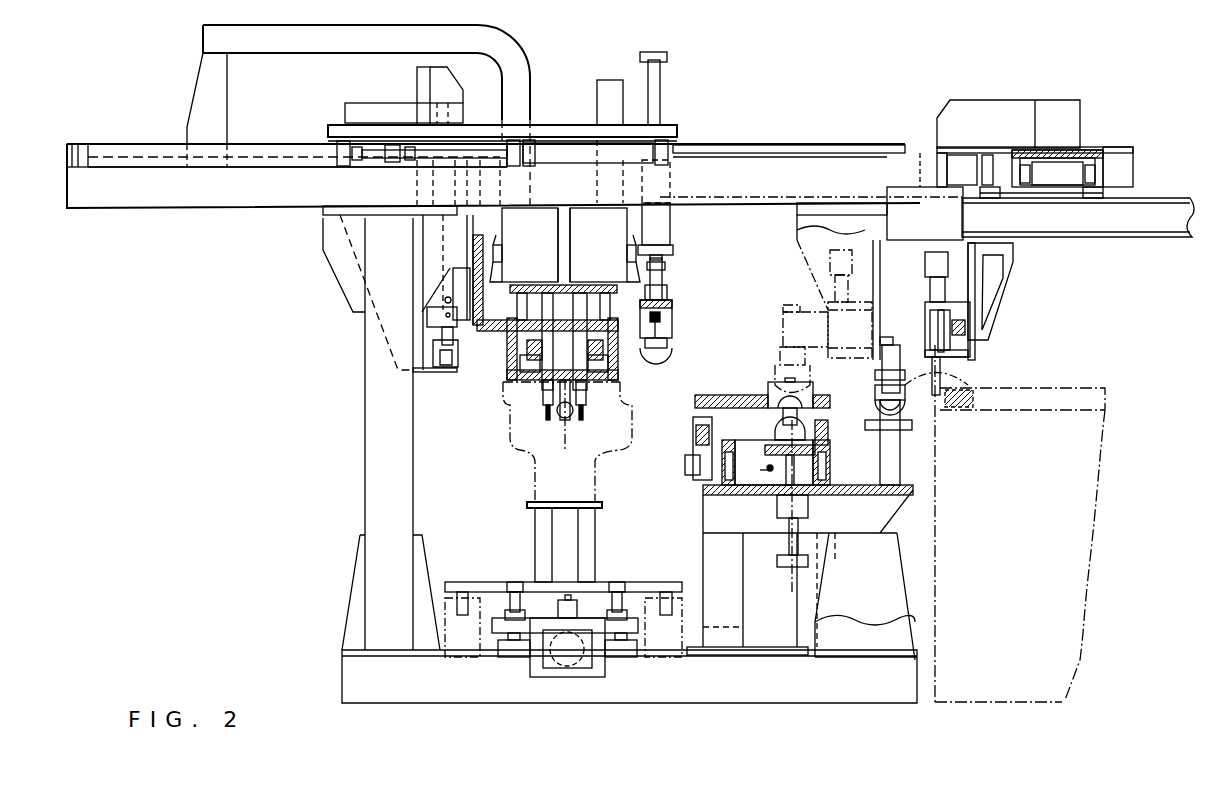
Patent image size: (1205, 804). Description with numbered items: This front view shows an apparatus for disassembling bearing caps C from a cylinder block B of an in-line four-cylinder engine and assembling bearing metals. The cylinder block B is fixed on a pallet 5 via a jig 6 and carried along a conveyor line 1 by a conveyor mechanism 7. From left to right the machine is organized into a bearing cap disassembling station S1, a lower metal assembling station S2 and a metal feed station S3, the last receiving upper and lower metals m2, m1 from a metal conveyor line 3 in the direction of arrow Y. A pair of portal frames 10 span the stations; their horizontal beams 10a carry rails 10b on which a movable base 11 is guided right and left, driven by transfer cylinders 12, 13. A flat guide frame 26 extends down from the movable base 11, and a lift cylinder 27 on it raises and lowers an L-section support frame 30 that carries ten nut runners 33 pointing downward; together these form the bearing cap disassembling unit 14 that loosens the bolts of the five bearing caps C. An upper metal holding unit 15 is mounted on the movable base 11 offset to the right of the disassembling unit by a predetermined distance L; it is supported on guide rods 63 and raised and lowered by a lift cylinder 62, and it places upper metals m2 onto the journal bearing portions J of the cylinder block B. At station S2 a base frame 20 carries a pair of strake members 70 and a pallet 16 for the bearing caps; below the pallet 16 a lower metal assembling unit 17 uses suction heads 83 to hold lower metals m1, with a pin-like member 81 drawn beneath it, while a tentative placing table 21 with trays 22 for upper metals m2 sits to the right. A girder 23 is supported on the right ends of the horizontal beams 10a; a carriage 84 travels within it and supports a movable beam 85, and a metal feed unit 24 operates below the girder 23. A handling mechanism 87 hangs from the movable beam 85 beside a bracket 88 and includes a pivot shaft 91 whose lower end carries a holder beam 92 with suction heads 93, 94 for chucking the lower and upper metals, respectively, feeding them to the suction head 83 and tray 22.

The conveyor line 1 is at (476, 538).
The metal conveyor line 3 is at (1084, 395).
The pallet 5 is at (460, 582).
The jig 6 is at (540, 555).
The conveyor mechanism 7 is at (652, 637).
The portal frame 10 is at (772, 153).
The horizontal beam 10a is at (172, 210).
The rail 10b is at (730, 145).
The movable base 11 is at (562, 125).
The transfer cylinder 12 is at (252, 167).
The transfer cylinder 13 is at (570, 163).
The bearing cap disassembling unit 14 is at (481, 400).
The upper metal holding unit 15 is at (686, 303).
The pallet 16 is at (874, 411).
The lower metal assembling unit 17 is at (710, 510).
The base frame 20 is at (913, 492).
The tentative placing table 21 is at (907, 432).
The tray 22 is at (907, 402).
The girder 23 is at (1095, 148).
The metal feed unit 24 is at (924, 203).
The guide frame 26 is at (417, 82).
The lift cylinder 27 is at (433, 186).
The support frame 30 is at (486, 342).
The nut runner 33 is at (525, 272).
The lift cylinder 62 is at (675, 226).
The guide rod 63 is at (652, 75).
The strake member 70 is at (748, 508).
The locating pin 81 is at (778, 545).
The suction head 83 is at (768, 400).
The carriage 84 is at (1050, 160).
The movable beam 85 is at (1176, 198).
The handling mechanism 87 is at (922, 300).
The bracket 88 is at (985, 290).
The pivot shaft 91 is at (970, 346).
The holder beam 92 is at (811, 213).
The suction head 93 is at (775, 358).
The suction head 94 is at (945, 380).
The cylinder block B is at (520, 468).
The bearing cap C is at (768, 390).
The journal bearing portion J is at (560, 415).
The predetermined distance L is at (655, 447).
The bearing cap disassembling station S1 is at (558, 458).
The lower metal assembling station S2 is at (680, 318).
The metal feed station S3 is at (874, 378).
The lower metal m1 is at (808, 432).
The upper metal m2 is at (960, 412).
The arrow Y is at (1080, 327).